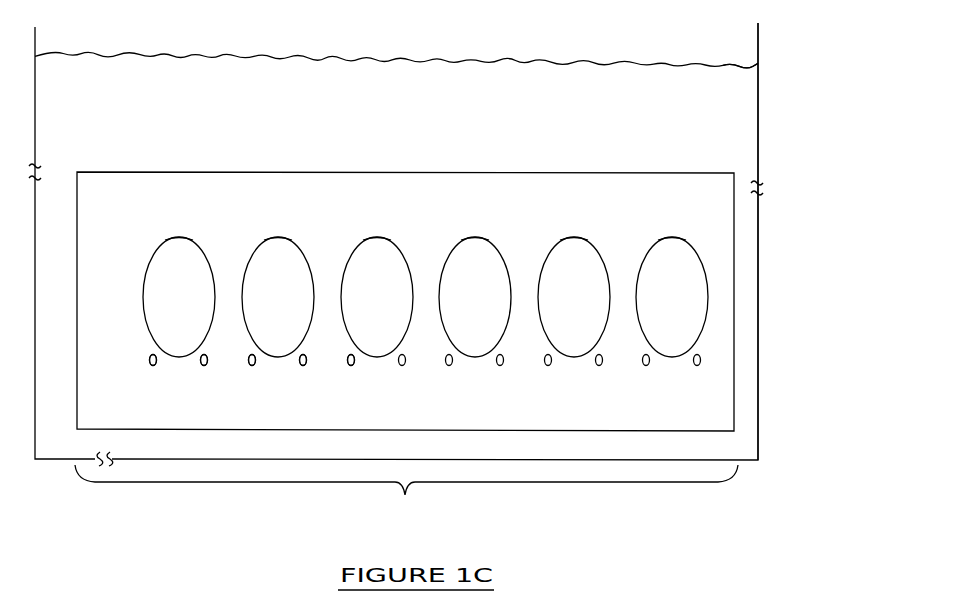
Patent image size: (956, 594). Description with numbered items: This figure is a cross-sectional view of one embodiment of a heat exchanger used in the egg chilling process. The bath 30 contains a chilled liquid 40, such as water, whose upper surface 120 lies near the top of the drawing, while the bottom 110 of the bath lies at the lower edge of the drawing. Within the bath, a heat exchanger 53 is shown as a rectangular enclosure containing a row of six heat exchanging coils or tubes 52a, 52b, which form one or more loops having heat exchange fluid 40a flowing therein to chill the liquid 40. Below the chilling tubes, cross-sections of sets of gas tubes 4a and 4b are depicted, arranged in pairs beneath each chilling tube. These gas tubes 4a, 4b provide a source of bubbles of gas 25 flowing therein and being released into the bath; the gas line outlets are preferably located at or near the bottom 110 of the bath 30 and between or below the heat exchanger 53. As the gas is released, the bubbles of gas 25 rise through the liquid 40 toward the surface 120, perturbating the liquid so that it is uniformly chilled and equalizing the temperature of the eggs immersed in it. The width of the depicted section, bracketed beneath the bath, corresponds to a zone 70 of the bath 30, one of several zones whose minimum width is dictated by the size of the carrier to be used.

The bottom of bath 110 is at (751, 476).
The surface of liquid 120 is at (728, 63).
The liquid 40 is at (745, 90).
The bath 30 is at (758, 137).
The heat exchanger 53 is at (725, 357).
The heat exchange fluid 40a is at (425, 297).
The heat exchanging coil or tube 52a is at (179, 237).
The heat exchanging coil or tube 52b is at (475, 237).
The gas tube 4a is at (153, 375).
The gas tube 4b is at (204, 375).
The bubbles of gas 25 is at (150, 363).
The zone 70 is at (406, 493).